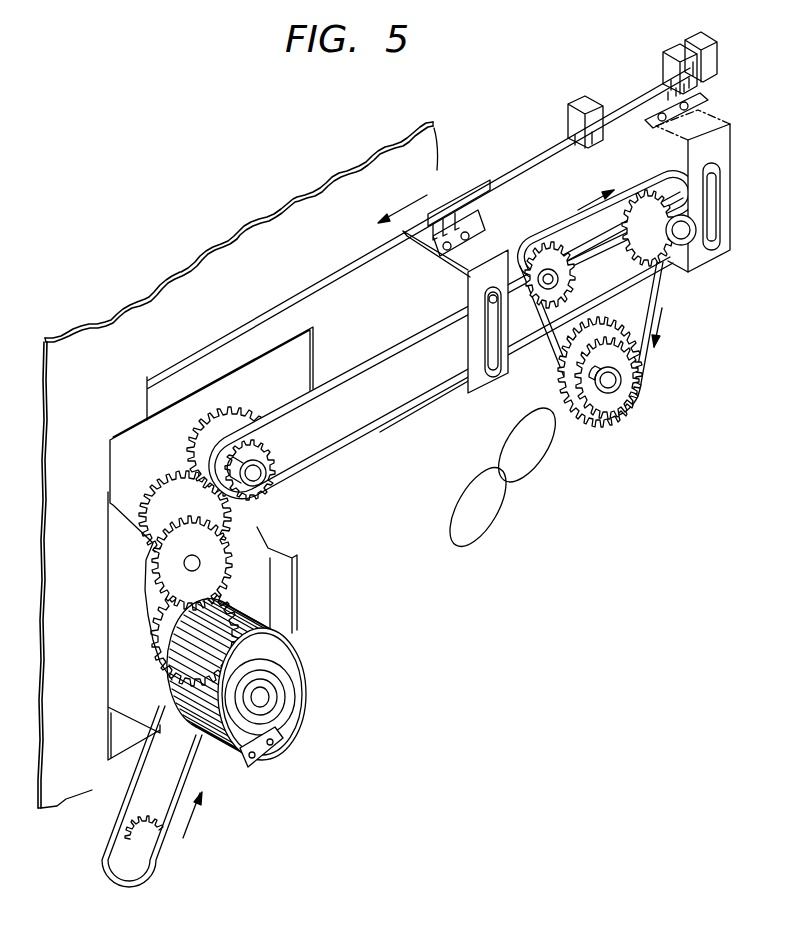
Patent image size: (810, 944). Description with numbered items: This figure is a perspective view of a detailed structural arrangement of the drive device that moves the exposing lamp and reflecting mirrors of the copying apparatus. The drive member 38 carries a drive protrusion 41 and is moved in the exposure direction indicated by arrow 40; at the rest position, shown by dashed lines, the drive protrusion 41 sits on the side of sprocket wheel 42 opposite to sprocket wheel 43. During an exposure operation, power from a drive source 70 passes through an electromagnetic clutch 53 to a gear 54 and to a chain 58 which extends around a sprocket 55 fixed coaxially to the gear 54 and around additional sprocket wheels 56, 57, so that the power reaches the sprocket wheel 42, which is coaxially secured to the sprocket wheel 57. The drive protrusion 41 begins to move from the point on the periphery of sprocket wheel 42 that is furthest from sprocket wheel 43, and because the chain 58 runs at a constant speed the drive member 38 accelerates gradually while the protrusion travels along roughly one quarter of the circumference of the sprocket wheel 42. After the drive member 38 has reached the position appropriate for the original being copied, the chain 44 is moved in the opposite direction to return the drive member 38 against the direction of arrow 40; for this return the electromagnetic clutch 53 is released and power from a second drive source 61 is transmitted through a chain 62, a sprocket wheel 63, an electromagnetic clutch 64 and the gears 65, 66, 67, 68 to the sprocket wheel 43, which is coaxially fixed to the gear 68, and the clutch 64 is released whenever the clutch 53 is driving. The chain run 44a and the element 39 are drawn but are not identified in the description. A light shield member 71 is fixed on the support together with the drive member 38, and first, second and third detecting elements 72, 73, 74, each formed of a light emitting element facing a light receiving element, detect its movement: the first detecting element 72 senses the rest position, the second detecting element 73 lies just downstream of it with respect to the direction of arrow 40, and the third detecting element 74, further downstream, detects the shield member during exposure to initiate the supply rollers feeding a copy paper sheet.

The arrow 40 is at (411, 205).
The light shield member 71 is at (483, 198).
The third detecting element 74 is at (572, 108).
The second detecting element 73 is at (663, 55).
The first detecting element 72 is at (712, 58).
The sprocket wheel 57 is at (655, 190).
The sprocket wheel 56 is at (548, 256).
The sprocket wheel 42 is at (664, 252).
The chain 58 is at (676, 302).
The sprocket 55 is at (628, 365).
The gear 54 is at (574, 412).
The electromagnetic clutch 53 is at (537, 453).
The drive source 70 is at (490, 523).
The pin 39 is at (494, 338).
The drive protrusion 41 is at (494, 372).
The drive member 38 is at (480, 385).
The belt lower run 44a is at (403, 422).
The chain 44 is at (338, 395).
The sprocket wheel 43 is at (275, 473).
The gear 68 is at (190, 470).
The gear 67 is at (160, 543).
The gear 66 is at (163, 578).
The gear 65 is at (163, 652).
The sprocket wheel 63 is at (178, 660).
The electromagnetic clutch 64 is at (300, 672).
The chain 62 is at (212, 774).
The drive source 61 is at (150, 855).